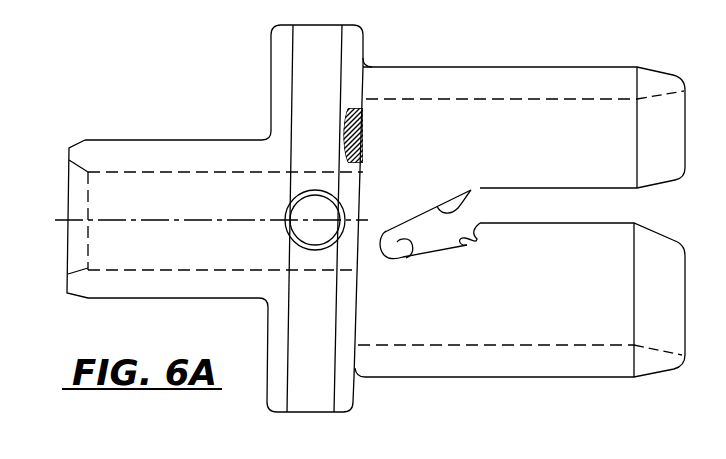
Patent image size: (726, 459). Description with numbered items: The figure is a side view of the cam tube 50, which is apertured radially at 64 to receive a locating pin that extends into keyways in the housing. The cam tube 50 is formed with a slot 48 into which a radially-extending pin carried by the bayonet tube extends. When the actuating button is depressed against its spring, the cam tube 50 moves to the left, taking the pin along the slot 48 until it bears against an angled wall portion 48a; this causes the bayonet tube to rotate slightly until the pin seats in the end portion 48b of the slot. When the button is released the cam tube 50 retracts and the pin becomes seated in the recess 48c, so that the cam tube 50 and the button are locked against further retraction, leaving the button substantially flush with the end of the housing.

The cam tube 50 is at (548, 67).
The slot 48 is at (597, 205).
The angled wall portion 48a is at (475, 192).
The end portion 48b is at (413, 258).
The recess 48c is at (465, 250).
The radial aperture 64 is at (297, 211).